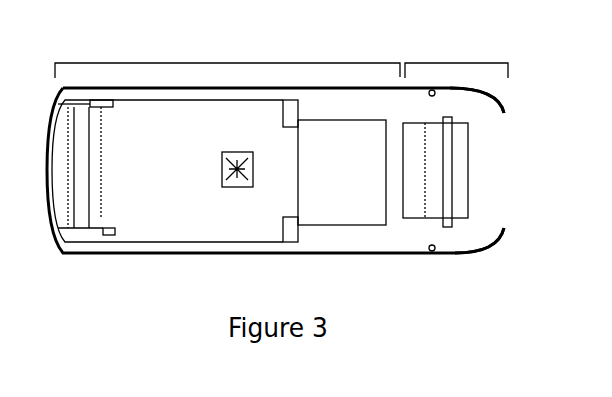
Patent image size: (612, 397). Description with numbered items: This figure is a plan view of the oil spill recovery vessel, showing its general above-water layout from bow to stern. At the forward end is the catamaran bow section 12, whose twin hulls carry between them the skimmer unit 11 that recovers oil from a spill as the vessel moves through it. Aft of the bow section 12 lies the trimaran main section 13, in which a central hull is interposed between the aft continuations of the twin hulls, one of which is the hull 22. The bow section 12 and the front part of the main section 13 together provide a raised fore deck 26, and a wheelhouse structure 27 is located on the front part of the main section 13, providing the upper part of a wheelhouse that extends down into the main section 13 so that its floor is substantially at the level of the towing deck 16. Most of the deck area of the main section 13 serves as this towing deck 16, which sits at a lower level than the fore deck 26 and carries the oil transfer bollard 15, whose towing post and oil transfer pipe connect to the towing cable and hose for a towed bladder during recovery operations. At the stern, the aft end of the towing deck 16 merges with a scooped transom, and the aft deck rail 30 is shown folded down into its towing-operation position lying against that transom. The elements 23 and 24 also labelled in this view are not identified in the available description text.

The skimmer unit 11 is at (470, 168).
The catamaran bow section 12 is at (457, 63).
The trimaran main section 13 is at (227, 63).
The oil transfer bollard 15 is at (238, 168).
The towing deck 16 is at (175, 171).
The twin hull 22 is at (342, 172).
The lower hull wall 23 is at (473, 233).
The upper hull wall 24 is at (472, 110).
The fore deck 26 is at (427, 172).
The wheelhouse structure 27 is at (50, 152).
The aft deck rail 30 is at (68, 192).